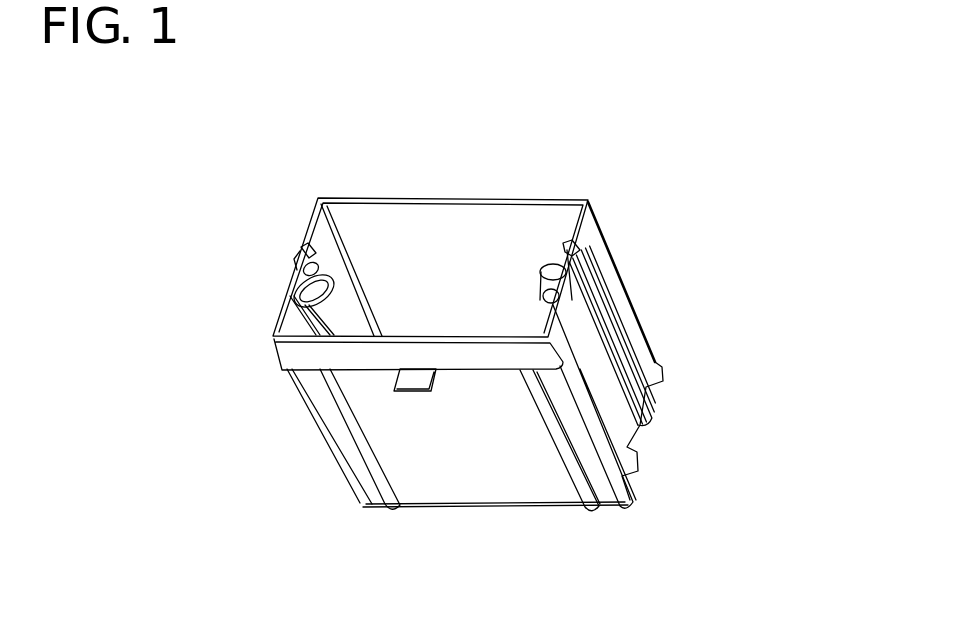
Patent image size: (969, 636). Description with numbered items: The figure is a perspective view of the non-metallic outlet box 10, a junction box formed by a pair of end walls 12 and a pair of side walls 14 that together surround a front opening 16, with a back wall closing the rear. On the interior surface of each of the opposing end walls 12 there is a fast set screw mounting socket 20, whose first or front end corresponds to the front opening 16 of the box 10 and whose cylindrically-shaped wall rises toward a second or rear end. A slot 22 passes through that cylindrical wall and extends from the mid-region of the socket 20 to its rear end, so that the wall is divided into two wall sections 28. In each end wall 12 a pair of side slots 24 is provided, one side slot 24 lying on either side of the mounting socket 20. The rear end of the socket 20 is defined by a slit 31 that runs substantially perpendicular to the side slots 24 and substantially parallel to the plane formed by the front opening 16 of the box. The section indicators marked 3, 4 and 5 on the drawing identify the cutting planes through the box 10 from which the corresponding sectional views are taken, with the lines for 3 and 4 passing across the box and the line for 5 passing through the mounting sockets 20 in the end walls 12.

The non-metallic outlet box 10 is at (772, 140).
The end wall 12 is at (318, 205).
The side wall 14 is at (422, 218).
The front opening 16 is at (425, 323).
The fast set screw mounting socket 20 is at (305, 262).
The slot 22 is at (568, 272).
The side slot 24 is at (567, 314).
The wall section 28 is at (338, 283).
The slit 31 is at (305, 308).
The section line 3- 3 is at (731, 195).
The section line 4- 4 is at (570, 177).
The section line 5- 5 is at (222, 245).